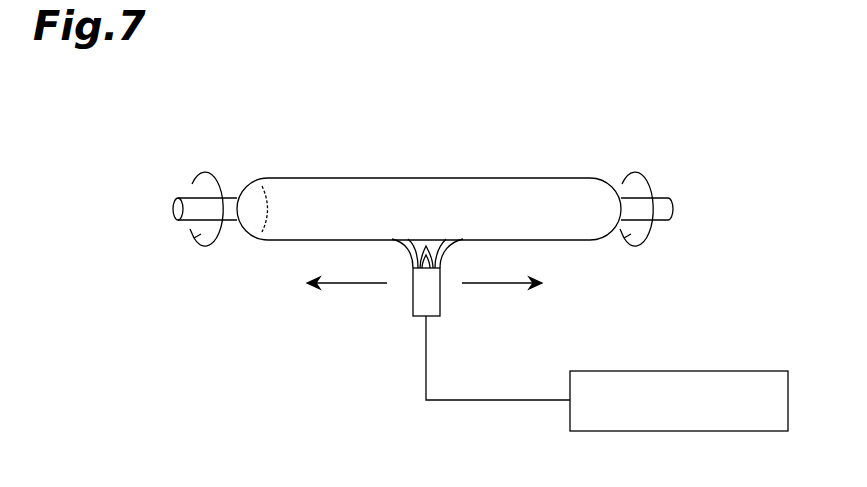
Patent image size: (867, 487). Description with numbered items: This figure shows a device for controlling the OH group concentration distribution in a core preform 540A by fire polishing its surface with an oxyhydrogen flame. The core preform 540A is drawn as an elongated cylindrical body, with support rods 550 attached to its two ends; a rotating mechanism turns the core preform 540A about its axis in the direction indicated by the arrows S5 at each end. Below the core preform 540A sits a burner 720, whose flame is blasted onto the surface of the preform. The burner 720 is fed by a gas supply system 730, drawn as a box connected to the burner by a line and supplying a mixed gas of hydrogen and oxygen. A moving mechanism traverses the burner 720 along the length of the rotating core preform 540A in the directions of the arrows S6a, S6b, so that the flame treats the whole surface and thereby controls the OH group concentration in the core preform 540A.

The core preform 540A is at (481, 190).
The support rods 550 is at (190, 198).
The burner 720 is at (417, 307).
The gas supply system 730 is at (733, 371).
The arrows indicating rotation direction S5 is at (207, 172).
The arrow indicating burner moving direction S6a is at (350, 284).
The arrow indicating burner moving direction S6b is at (503, 284).